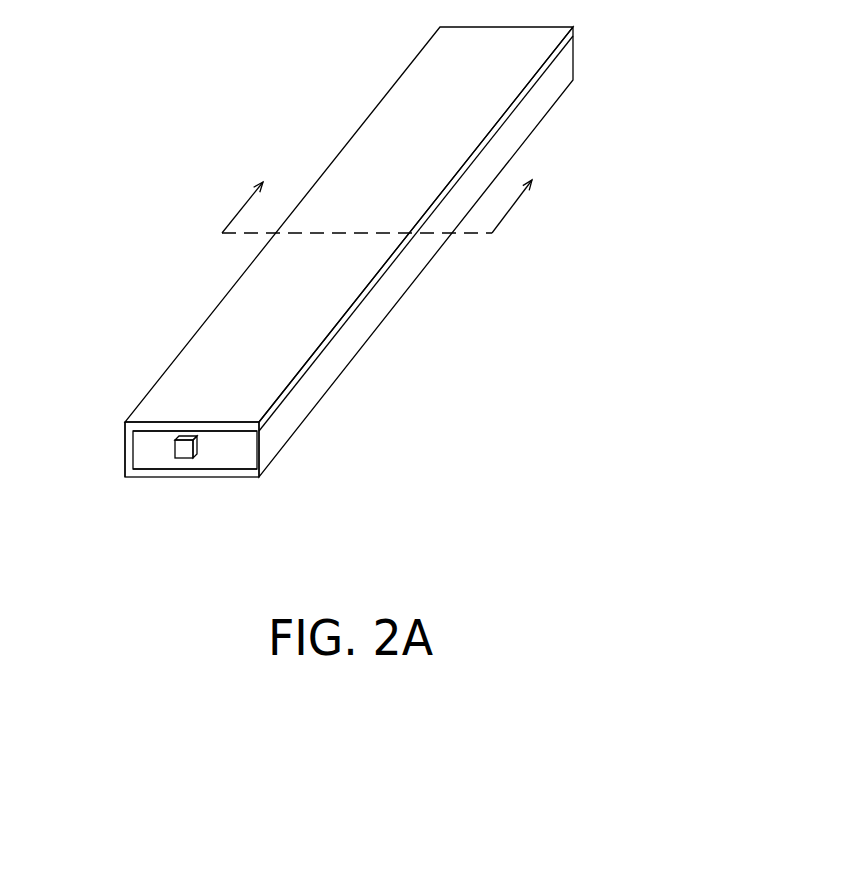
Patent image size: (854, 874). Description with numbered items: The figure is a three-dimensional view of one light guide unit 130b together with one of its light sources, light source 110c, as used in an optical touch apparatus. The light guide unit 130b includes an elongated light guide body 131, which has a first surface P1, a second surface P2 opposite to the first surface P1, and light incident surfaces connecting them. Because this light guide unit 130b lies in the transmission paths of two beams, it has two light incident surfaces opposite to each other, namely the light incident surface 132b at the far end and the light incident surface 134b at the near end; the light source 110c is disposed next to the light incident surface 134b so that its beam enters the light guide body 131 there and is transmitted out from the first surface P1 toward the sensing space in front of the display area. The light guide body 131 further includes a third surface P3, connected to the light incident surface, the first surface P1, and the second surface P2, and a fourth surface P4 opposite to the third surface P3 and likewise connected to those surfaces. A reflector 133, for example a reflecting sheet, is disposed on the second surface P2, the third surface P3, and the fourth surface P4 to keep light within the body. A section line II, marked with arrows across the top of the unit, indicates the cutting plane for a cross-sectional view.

The light guide unit 130b is at (358, 274).
The light guide body 131 is at (318, 374).
The light incident surface 132b is at (573, 55).
The reflector 133 is at (225, 340).
The light incident surface 134b is at (240, 452).
The light source 110c is at (187, 453).
The first surface P1 is at (347, 332).
The second surface P2 is at (132, 450).
The third surface P3 is at (165, 431).
The fourth surface P4 is at (168, 469).
The section line II- II is at (550, 167).